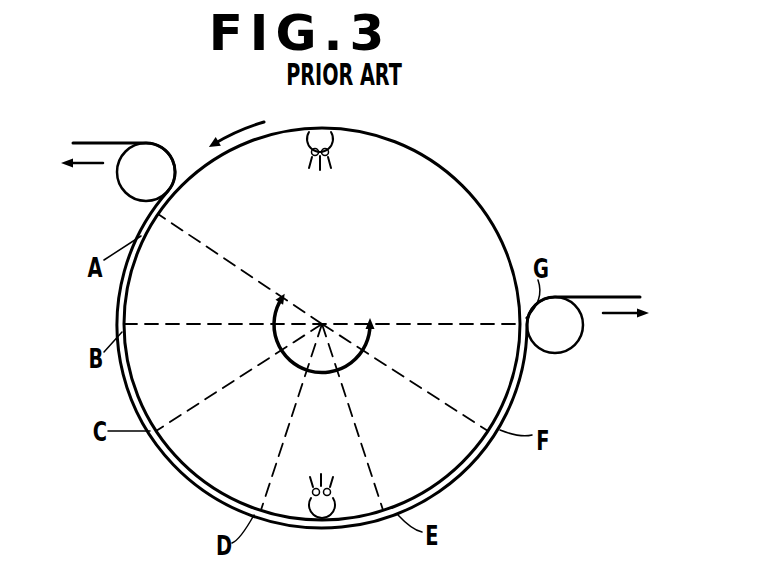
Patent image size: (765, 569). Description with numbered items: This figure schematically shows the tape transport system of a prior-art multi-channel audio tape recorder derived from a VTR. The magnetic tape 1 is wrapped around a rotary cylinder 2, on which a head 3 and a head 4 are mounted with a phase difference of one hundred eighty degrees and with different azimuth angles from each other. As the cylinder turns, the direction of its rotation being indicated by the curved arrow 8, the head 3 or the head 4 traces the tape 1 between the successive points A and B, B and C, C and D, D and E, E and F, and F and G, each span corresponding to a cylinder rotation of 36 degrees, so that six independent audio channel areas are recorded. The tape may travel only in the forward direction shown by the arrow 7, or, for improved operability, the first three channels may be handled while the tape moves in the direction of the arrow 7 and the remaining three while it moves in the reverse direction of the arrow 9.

The magnetic tape 1 is at (586, 294).
The rotary cylinder 2 is at (495, 243).
The head 3 is at (334, 150).
The head 4 is at (333, 494).
The arrow 7 is at (617, 317).
The drum rotation direction 8 is at (232, 137).
The arrow 9 is at (100, 166).
The angle of 36 degrees 36 is at (276, 307).